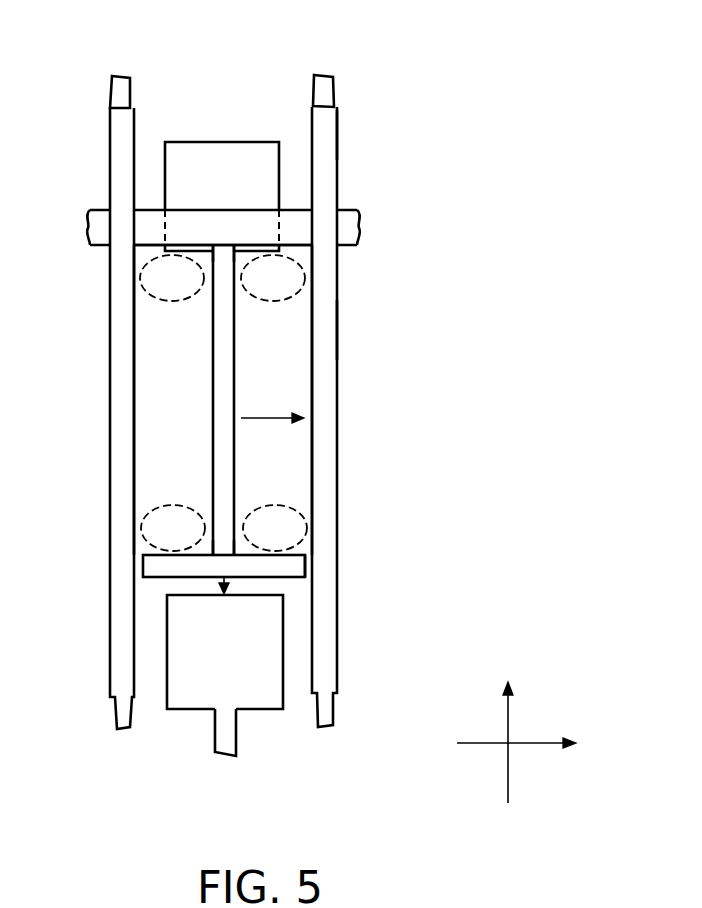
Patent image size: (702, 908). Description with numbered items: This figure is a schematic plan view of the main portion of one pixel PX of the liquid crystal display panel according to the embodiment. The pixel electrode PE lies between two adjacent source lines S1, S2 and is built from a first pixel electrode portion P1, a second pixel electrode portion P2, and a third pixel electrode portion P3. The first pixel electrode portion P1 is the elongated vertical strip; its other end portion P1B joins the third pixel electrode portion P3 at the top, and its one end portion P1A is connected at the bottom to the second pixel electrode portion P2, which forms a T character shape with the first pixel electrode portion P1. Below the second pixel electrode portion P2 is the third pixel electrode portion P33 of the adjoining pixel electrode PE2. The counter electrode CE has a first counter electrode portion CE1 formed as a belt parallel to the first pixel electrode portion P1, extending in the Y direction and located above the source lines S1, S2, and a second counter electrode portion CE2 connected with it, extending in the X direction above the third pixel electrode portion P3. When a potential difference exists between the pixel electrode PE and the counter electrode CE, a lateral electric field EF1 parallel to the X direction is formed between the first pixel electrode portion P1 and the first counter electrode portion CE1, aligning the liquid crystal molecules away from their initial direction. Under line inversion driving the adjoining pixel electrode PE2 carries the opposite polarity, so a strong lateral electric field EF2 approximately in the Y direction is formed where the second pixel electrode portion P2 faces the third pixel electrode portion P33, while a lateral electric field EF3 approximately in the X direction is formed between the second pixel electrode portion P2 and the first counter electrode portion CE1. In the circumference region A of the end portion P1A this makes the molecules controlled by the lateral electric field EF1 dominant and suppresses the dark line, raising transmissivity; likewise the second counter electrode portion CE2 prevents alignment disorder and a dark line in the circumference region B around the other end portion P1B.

The source line S1 is at (125, 76).
The source line S2 is at (325, 75).
The first counter electrode portion CE1 is at (115, 482).
The second counter electrode portion CE2 is at (190, 223).
The counter electrode CE is at (340, 333).
The pixel PX is at (347, 133).
The third pixel electrode portion P3 is at (223, 141).
The first pixel electrode portion P1 is at (228, 461).
The other end portion P1B is at (222, 246).
The one end portion P1A is at (224, 556).
The pixel electrode PE is at (242, 393).
The circumference region B is at (250, 296).
The circumference region A is at (197, 503).
The second pixel electrode portion P2 is at (152, 566).
The lateral electric field EF1 is at (267, 418).
The lateral electric field EF2 is at (228, 579).
The lateral electric field EF3 is at (318, 568).
The third pixel electrode portion P33 is at (188, 711).
The pixel electrode PE2 is at (243, 748).
The X direction X is at (525, 743).
The Y direction Y is at (508, 726).